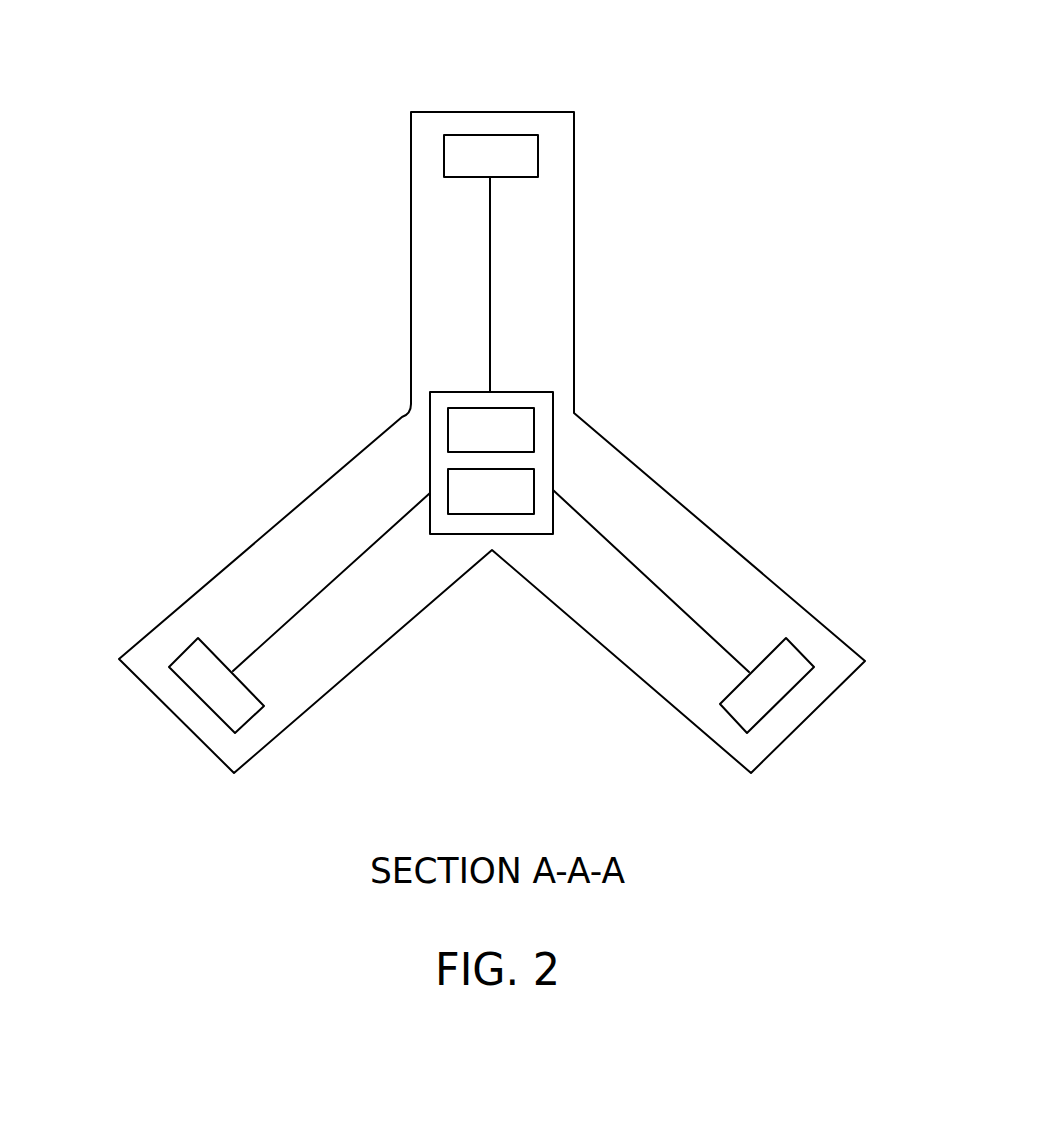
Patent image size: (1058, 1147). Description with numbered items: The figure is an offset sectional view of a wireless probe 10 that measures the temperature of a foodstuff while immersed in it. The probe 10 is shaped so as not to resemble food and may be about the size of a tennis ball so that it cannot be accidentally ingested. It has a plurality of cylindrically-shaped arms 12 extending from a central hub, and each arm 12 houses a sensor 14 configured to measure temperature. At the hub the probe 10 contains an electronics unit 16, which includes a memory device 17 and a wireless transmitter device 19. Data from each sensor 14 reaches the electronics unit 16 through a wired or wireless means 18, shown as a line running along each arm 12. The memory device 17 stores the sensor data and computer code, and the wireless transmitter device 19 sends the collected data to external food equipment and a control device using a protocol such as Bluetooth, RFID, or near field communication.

The wireless probe 10 is at (232, 63).
The arm 12 is at (574, 147).
The sensor 14 is at (444, 163).
The electronics unit 16 is at (428, 412).
The memory device 17 is at (534, 433).
The wired or wireless means 18 is at (490, 264).
The wireless transmitter device 19 is at (448, 490).